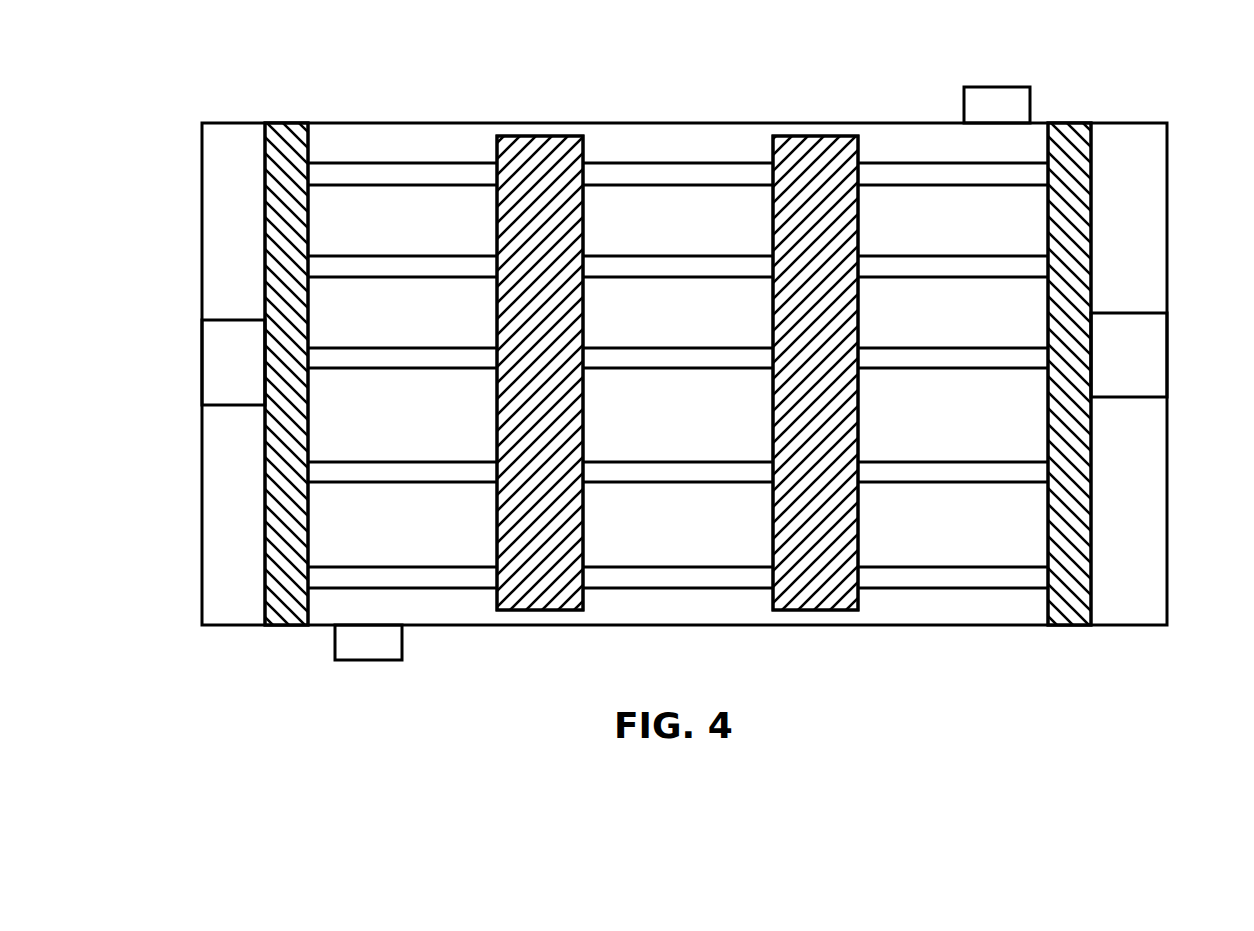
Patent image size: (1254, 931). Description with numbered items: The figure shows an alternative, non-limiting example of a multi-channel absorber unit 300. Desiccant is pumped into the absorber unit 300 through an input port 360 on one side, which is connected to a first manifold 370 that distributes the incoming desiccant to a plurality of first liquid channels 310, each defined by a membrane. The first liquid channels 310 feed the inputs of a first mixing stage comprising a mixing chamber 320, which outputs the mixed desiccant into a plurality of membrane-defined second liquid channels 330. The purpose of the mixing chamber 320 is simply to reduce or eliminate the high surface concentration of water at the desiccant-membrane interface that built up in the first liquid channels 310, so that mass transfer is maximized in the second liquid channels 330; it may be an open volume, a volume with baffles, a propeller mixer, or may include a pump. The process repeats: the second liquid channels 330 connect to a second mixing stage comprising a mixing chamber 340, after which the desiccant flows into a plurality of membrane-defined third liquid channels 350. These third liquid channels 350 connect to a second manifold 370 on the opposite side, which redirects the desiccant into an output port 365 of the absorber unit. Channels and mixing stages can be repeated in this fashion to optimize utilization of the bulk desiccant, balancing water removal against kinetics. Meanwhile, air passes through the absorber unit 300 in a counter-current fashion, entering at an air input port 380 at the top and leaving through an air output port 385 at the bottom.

The absorber unit 300 is at (220, 90).
The first liquid channels 310 is at (420, 156).
The mixing chamber 320 is at (534, 130).
The second liquid channels 330 is at (655, 159).
The mixing chamber 340 is at (809, 131).
The third liquid channels 350 is at (880, 156).
The input port 360 is at (231, 366).
The output port 365 is at (1148, 345).
The manifold 370 is at (300, 117).
The air input port 380 is at (1006, 110).
The air output port 385 is at (358, 640).